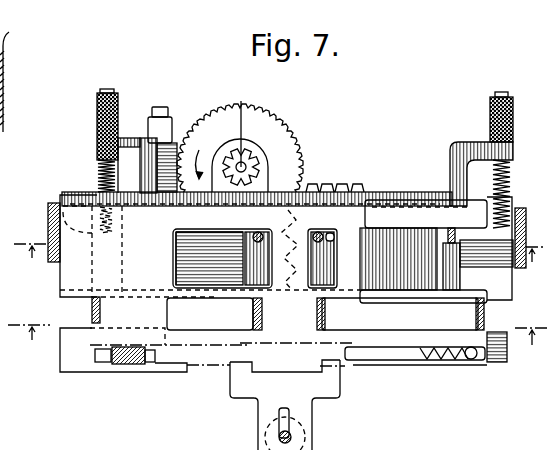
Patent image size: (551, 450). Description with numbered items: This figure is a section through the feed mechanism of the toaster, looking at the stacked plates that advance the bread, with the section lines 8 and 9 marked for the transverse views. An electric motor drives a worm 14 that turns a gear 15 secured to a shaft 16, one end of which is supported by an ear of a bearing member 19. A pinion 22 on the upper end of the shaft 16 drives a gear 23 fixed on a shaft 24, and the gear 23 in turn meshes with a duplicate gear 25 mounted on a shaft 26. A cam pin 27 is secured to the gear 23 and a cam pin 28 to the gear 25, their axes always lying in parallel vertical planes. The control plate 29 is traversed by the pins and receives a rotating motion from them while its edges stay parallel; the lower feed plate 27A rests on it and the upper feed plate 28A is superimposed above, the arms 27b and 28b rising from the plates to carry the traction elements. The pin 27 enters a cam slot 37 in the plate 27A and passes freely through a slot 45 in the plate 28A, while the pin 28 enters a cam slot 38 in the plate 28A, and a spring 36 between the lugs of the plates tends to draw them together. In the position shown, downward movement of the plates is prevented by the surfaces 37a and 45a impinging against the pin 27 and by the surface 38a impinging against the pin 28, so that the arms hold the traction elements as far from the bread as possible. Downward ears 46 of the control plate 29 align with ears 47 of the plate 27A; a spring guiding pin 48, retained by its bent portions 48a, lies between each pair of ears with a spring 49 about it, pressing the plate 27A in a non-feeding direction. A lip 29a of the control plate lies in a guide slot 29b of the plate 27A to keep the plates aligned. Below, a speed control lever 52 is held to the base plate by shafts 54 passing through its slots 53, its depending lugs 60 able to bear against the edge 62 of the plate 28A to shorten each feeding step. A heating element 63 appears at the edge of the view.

The heating elements 63 is at (0, 106).
The ears 46 is at (97, 100).
The bent portions 48a is at (108, 90).
The spring guiding pin 48 is at (98, 173).
The spring 49 is at (98, 157).
The worm 14 is at (170, 137).
The gear 15 is at (258, 128).
The shaft 16 is at (240, 124).
The pinion 22 is at (247, 161).
The control plate 29 is at (405, 192).
The gear 25 is at (337, 185).
The bearing member 19 is at (527, 215).
The ears 47 is at (72, 246).
The arms 28b is at (92, 312).
The slot 45 is at (183, 260).
The surface 45a is at (203, 228).
The shaft 24 is at (174, 249).
The cam slot 37 is at (262, 258).
The surface 37a is at (250, 222).
The cam pin 27 is at (257, 228).
The cam pin 28 is at (318, 232).
The cam slot 38 is at (332, 262).
The surface 38a is at (370, 205).
The shaft 26 is at (383, 218).
The guide slot 29b is at (442, 266).
The lip 29a is at (455, 240).
The gear 23 is at (203, 300).
The arms 27b is at (484, 322).
The spring 36 is at (145, 352).
The edge 62 is at (282, 347).
The depending lugs 60 is at (345, 350).
The feed plate 28A is at (405, 341).
The feed plate 27A is at (463, 322).
The speed control lever 52 is at (312, 417).
The slots 53 is at (265, 429).
The shafts 54 is at (292, 438).
The section line 8 is at (280, 271).
The section line 9 is at (525, 377).